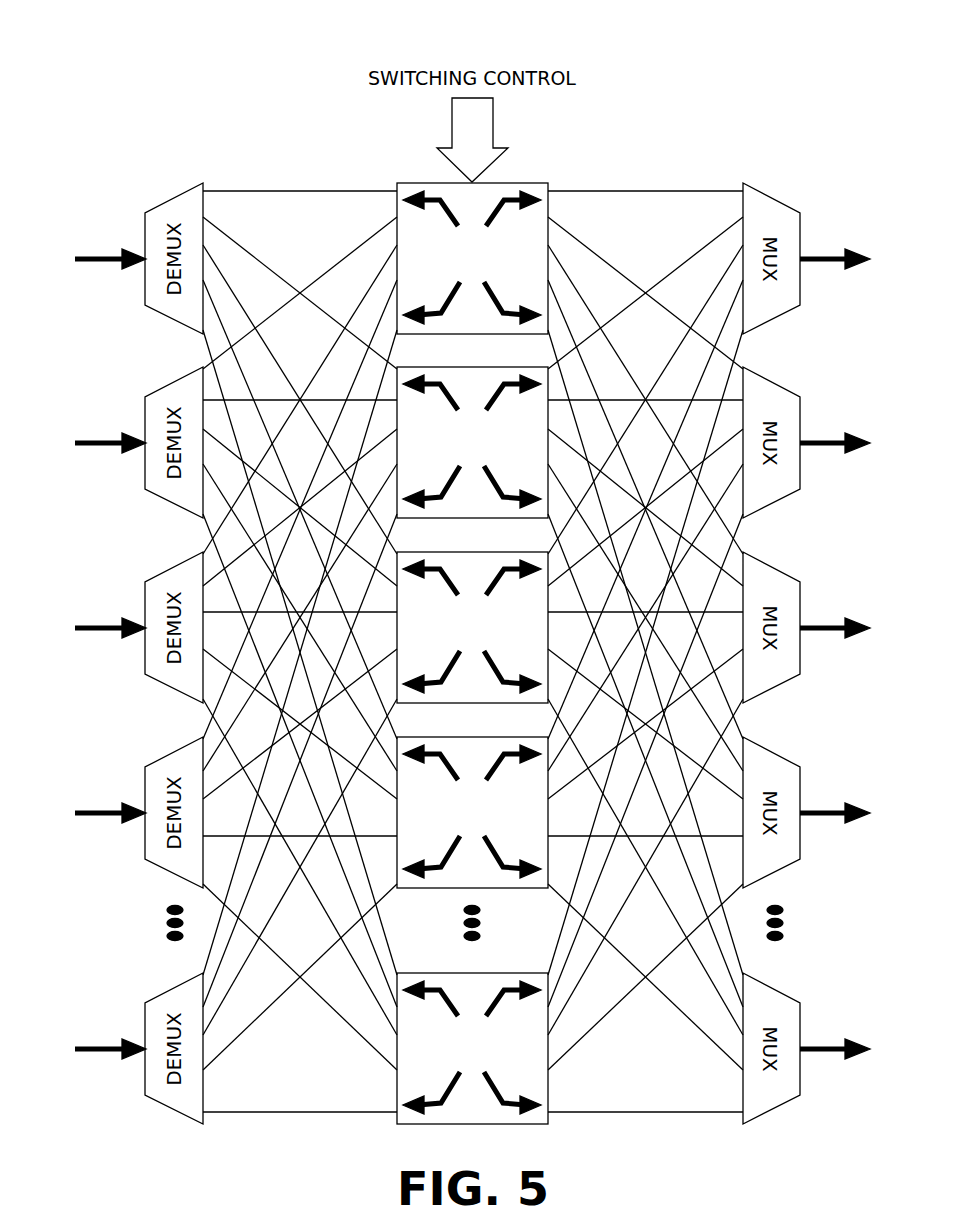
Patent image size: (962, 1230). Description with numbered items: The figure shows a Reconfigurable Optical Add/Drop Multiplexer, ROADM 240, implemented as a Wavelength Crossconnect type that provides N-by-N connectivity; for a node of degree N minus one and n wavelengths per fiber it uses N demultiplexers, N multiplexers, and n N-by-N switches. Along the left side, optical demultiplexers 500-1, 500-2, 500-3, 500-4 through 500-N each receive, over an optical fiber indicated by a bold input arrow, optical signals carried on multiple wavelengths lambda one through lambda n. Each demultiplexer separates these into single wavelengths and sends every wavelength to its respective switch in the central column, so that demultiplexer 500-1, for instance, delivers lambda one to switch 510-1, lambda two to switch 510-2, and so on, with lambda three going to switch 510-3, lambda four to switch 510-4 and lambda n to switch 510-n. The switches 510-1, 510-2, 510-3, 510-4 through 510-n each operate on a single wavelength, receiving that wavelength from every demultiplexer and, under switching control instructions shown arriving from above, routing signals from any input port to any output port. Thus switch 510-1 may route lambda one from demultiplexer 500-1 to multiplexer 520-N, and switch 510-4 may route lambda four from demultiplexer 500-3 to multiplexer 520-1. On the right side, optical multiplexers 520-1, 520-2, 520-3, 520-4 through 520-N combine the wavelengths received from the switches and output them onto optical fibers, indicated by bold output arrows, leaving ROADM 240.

The ROADM 240 is at (108, 74).
The optical demultiplexer 500-1 is at (172, 197).
The optical demultiplexer 500-2 is at (172, 381).
The optical demultiplexer 500-3 is at (172, 566).
The optical demultiplexer 500-4 is at (172, 751).
The optical demultiplexer 500-N is at (172, 987).
The optical switch 510-1 is at (472, 258).
The optical switch 510-2 is at (472, 442).
The optical switch 510-3 is at (472, 627).
The optical switch 510-4 is at (472, 812).
The optical switch 510-n is at (472, 1048).
The optical multiplexer 520-1 is at (793, 207).
The optical multiplexer 520-2 is at (793, 391).
The optical multiplexer 520-3 is at (793, 576).
The optical multiplexer 520-4 is at (793, 761).
The optical multiplexer 520-N is at (793, 989).